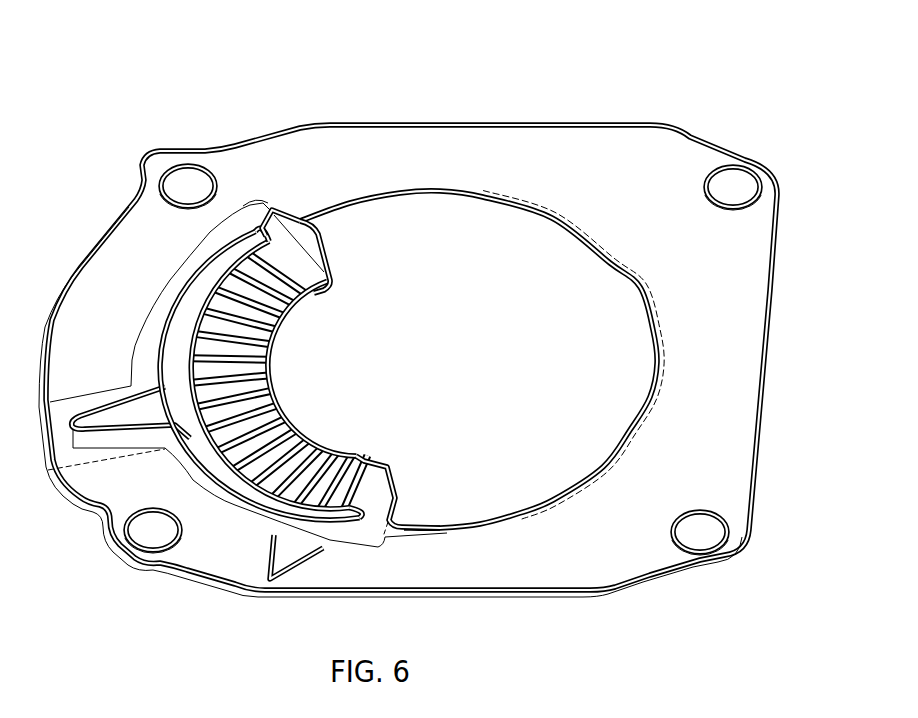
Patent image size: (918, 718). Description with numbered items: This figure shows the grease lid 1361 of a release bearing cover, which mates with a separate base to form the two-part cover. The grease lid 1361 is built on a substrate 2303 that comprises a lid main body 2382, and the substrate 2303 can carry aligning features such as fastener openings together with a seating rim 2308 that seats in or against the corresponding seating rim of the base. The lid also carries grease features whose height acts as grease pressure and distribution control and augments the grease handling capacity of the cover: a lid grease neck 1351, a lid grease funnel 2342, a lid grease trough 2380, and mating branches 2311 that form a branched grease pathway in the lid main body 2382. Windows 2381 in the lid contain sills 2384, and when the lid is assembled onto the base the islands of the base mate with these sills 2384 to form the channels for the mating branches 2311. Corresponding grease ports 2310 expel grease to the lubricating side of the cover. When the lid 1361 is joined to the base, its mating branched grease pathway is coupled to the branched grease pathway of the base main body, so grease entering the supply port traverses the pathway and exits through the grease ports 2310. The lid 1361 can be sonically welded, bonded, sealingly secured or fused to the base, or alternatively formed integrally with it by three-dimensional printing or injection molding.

The grease lid 1361 is at (535, 93).
The substrate 2303 is at (655, 170).
The seating rim 2308 is at (653, 347).
The lid grease neck 1351 is at (66, 466).
The lid grease funnel 2342 is at (82, 411).
The windows 2381 is at (283, 311).
The grease ports 2310 is at (340, 463).
The sills 2384 is at (248, 282).
The lid grease trough 2380 is at (273, 213).
The mating branches 2311 is at (326, 284).
The lid main body 2382 is at (372, 448).